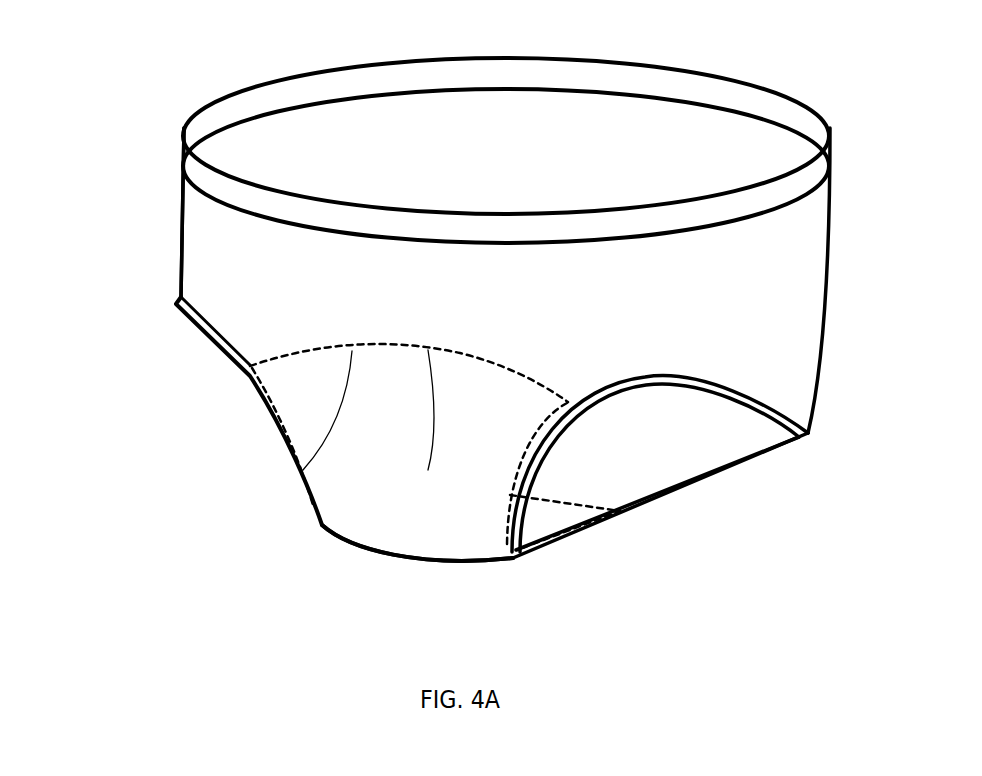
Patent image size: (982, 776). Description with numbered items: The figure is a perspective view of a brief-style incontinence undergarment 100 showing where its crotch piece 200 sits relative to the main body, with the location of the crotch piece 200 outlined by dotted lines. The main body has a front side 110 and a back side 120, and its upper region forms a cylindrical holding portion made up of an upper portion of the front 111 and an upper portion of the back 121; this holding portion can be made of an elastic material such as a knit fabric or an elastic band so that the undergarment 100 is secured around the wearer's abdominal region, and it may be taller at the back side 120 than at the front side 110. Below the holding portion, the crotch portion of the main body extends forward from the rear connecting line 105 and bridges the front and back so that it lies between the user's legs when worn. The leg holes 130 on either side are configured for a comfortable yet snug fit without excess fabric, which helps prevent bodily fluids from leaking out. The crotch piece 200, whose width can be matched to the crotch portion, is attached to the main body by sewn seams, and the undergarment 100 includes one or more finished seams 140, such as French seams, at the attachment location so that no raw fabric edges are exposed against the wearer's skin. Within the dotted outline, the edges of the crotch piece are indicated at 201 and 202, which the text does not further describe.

The undergarment 100 is at (177, 51).
The rear connecting line 105 is at (598, 503).
The front side 110 is at (237, 248).
The upper portion of the front 111 is at (195, 212).
The back side 120 is at (697, 168).
The upper portion of the back 121 is at (677, 113).
The leg holes 130 is at (708, 442).
The finished seams 140 is at (557, 500).
The crotch piece 200 is at (287, 417).
The insert side edge 201 is at (292, 480).
The insert attachment region 202 is at (578, 500).